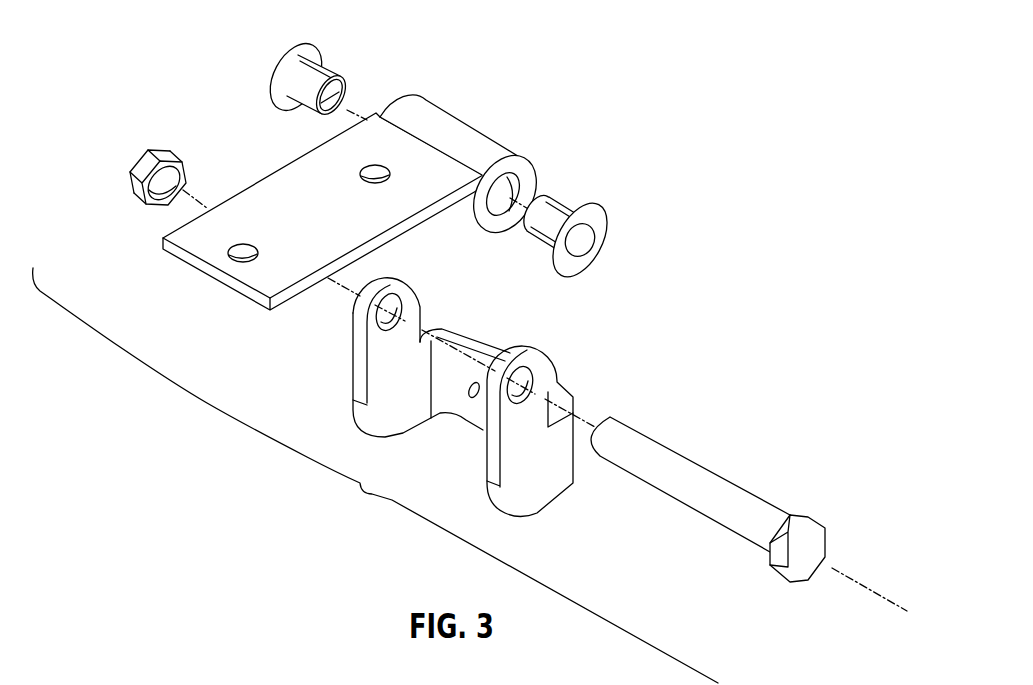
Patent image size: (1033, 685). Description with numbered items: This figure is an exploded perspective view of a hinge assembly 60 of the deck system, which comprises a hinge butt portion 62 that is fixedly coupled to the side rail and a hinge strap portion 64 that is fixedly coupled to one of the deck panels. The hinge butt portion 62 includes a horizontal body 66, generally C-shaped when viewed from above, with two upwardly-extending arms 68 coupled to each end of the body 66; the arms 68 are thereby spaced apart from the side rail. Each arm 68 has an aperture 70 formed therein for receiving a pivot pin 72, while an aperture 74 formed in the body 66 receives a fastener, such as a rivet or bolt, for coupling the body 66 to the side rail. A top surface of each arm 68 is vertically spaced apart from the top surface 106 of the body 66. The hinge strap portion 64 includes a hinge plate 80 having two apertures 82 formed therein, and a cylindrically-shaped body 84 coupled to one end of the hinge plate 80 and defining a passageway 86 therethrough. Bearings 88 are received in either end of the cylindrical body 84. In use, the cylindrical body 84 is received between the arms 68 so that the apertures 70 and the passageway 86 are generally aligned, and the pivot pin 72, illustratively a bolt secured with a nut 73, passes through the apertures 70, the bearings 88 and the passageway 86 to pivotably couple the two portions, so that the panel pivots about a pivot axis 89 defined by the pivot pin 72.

The hinge assembly 60 is at (375, 475).
The hinge butt portion 62 is at (485, 409).
The hinge strap portion 64 is at (371, 172).
The horizontal body 66 is at (477, 418).
The arms 68 is at (388, 363).
The aperture 70 is at (409, 307).
The pivot pin 72 is at (688, 470).
The nut 73 is at (140, 138).
The aperture 74 is at (474, 396).
The hinge plate 80 is at (272, 291).
The apertures 82 is at (231, 258).
The cylindrically-shaped body 84 is at (461, 138).
The passageway 86 is at (512, 186).
The bearings 88 is at (283, 56).
The pivot axis 89 is at (853, 583).
The top surface 106 is at (486, 348).